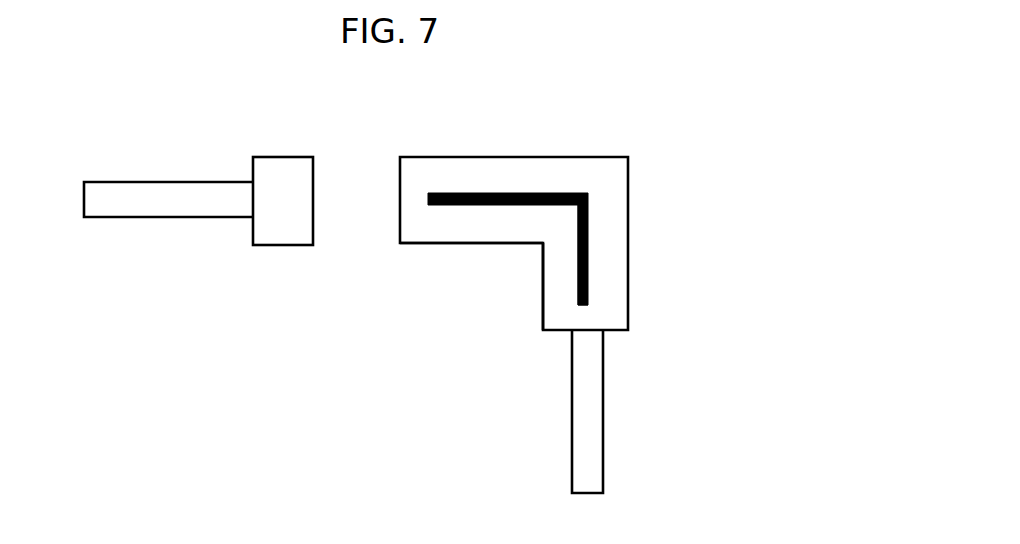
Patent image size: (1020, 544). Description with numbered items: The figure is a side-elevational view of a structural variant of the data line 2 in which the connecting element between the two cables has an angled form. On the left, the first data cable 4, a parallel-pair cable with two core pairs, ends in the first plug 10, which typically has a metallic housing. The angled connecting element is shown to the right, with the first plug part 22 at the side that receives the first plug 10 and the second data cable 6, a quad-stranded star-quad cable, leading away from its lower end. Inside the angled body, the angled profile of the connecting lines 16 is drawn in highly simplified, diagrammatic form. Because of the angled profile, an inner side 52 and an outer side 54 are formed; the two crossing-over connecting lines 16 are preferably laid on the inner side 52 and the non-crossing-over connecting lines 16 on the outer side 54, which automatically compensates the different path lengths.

The data line 2 is at (707, 177).
The first data cable 4 is at (177, 192).
The second data cable 6 is at (575, 382).
The first plug 10 is at (275, 178).
The connecting lines 16 is at (543, 192).
The first plug part 22 is at (450, 228).
The inner side 52 is at (565, 232).
The outer side 54 is at (602, 242).